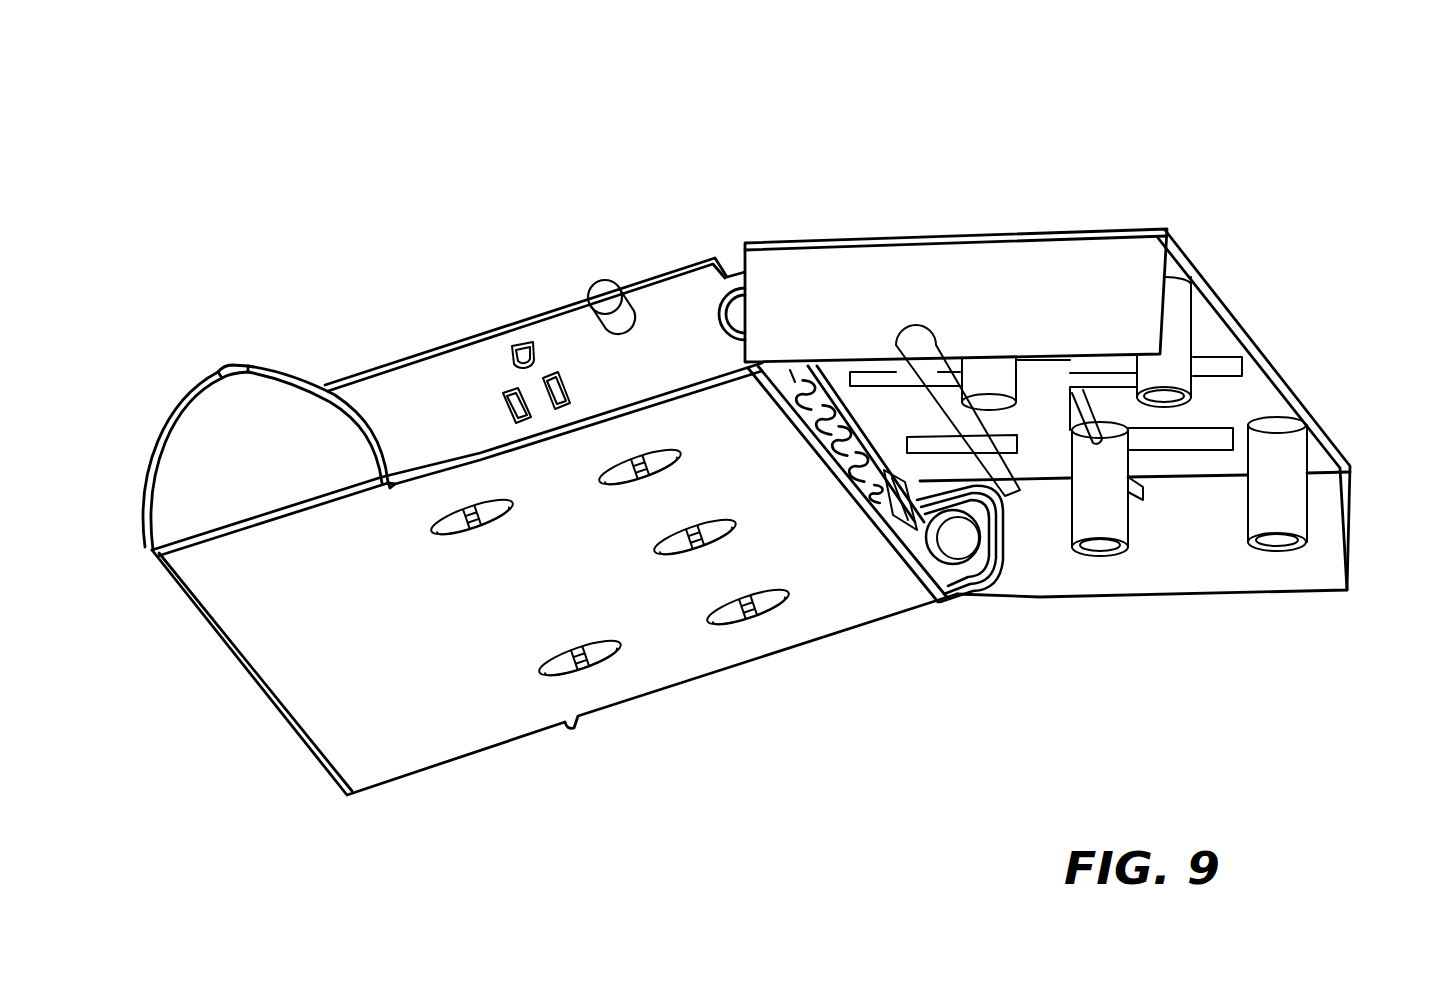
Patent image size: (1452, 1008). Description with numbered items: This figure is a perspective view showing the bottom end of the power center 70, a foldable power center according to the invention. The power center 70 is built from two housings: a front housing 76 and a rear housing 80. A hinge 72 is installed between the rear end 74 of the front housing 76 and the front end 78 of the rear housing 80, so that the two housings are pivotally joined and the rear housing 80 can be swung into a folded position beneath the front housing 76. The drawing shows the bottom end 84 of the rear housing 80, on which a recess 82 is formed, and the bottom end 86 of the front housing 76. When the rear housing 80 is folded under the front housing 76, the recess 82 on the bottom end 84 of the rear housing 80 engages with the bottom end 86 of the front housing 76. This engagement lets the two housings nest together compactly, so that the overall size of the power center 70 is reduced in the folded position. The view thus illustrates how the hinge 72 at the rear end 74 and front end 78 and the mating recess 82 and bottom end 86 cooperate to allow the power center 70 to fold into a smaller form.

The power center 70 is at (440, 130).
The hinge 72 is at (962, 537).
The rear end of the front housing 74 is at (913, 551).
The front housing 76 is at (472, 705).
The front end of the rear housing 78 is at (742, 252).
The rear housing 80 is at (1177, 547).
The recess 82 is at (1260, 403).
The bottom end of the rear housing 84 is at (1223, 333).
The bottom end of the front housing 86 is at (688, 648).